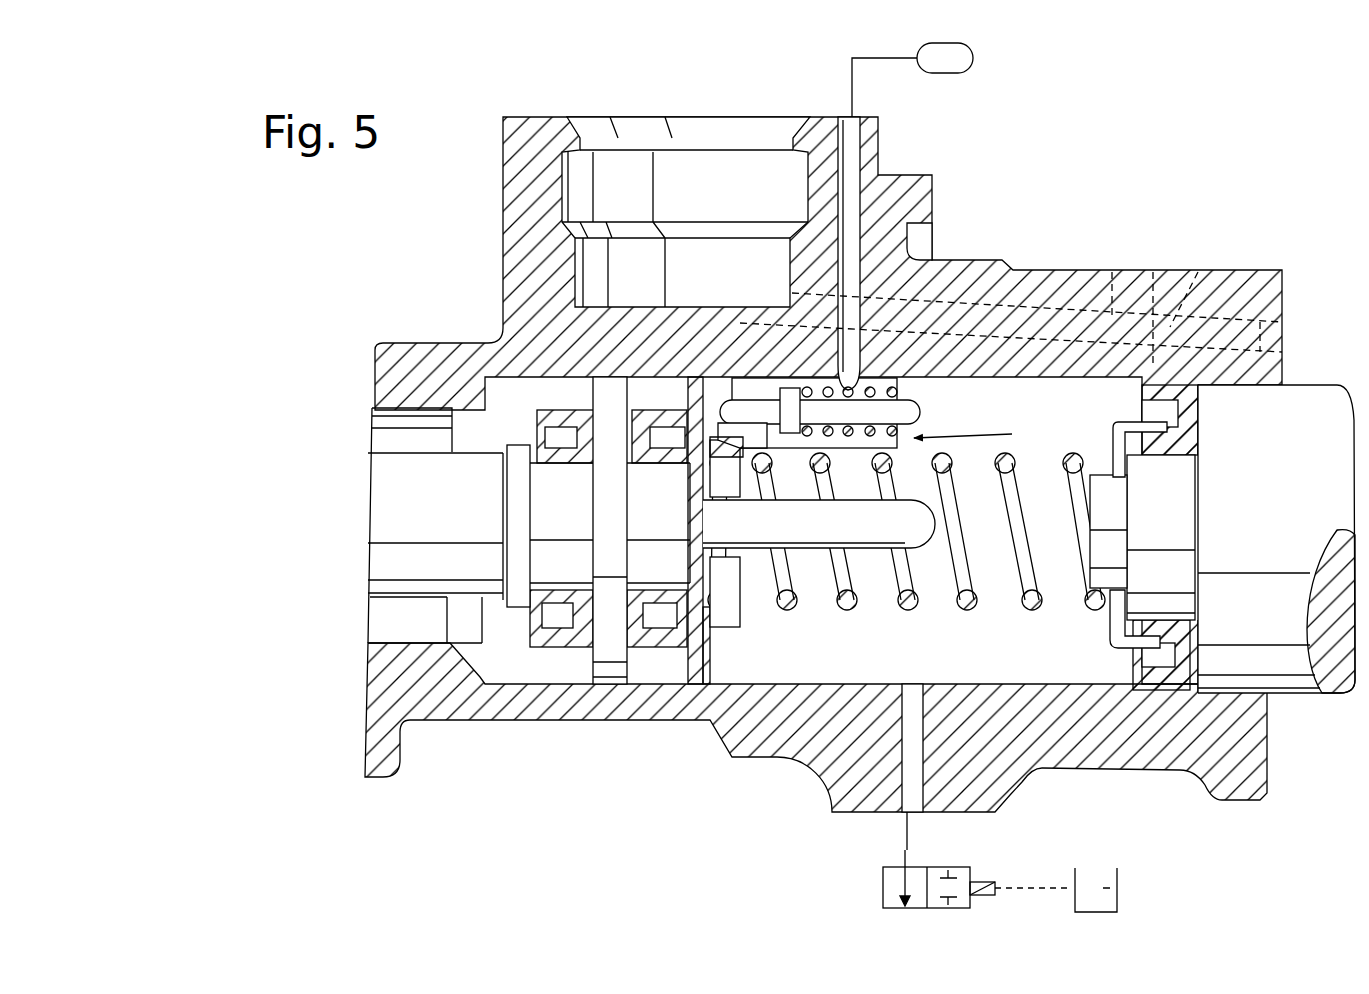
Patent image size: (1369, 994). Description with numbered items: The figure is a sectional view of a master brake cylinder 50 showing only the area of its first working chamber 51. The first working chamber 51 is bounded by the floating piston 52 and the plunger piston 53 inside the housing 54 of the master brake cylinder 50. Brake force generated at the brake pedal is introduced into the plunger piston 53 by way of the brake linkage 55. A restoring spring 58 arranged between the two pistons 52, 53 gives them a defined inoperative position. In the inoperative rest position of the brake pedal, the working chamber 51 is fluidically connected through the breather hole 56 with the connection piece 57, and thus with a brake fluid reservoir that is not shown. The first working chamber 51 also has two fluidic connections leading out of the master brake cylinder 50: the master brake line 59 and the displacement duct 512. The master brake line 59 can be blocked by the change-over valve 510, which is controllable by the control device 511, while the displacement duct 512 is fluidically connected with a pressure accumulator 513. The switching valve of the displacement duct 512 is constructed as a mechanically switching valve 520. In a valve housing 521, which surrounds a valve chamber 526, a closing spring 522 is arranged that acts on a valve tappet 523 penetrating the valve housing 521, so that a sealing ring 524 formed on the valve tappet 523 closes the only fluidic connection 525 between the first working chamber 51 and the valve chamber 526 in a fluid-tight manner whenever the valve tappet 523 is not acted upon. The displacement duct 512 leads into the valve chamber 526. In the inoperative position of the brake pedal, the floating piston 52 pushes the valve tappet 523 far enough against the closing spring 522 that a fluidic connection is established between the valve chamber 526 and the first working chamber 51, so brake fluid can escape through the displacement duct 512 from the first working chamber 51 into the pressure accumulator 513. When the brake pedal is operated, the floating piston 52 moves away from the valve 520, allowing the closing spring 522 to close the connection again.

The master brake cylinder 50 is at (1048, 253).
The first working chamber 51 is at (1068, 661).
The floating piston 52 is at (682, 660).
The plunger piston 53 is at (1143, 688).
The housing 54 is at (822, 777).
The brake linkage 55 is at (1281, 546).
The breather hole 56 is at (1198, 272).
The connection piece 57 is at (708, 203).
The restoring spring 58 is at (912, 607).
The master brake line 59 is at (905, 830).
The change-over valve 510 is at (986, 860).
The control device 511 is at (1120, 890).
The displacement duct 512 is at (867, 163).
The pressure accumulator 513 is at (955, 66).
The mechanically switching valve 520 is at (987, 434).
The valve housing 521 is at (845, 450).
The closing spring 522 is at (870, 387).
The valve tappet 523 is at (921, 408).
The sealing ring 524 is at (783, 447).
The fluidic connection 525 is at (740, 385).
The valve chamber 526 is at (745, 392).